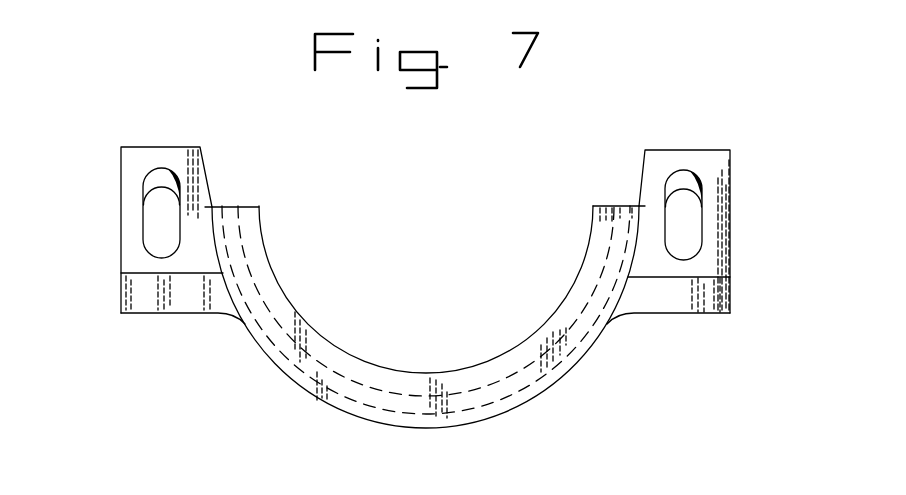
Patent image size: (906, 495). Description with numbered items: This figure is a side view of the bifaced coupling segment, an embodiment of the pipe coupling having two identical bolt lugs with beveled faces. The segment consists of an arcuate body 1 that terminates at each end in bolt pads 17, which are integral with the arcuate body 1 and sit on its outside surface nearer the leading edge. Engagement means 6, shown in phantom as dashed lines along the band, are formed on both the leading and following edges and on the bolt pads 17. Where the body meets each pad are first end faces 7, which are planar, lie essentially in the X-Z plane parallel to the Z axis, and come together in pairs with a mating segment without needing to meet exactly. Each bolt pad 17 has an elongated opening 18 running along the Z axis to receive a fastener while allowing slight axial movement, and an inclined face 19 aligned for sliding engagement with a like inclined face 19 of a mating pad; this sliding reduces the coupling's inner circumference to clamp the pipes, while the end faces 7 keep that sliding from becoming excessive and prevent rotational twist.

The arcuate body 1 is at (294, 420).
The engagement means 6 is at (450, 267).
The first end faces 7 is at (612, 205).
The bolt pads 17 is at (806, 108).
The elongated opening 18 is at (38, 231).
The inclined face 19 is at (834, 241).